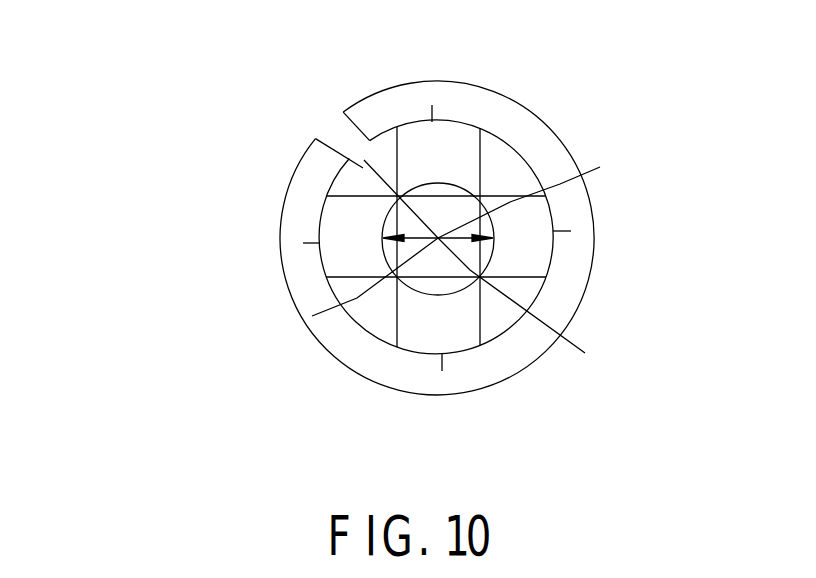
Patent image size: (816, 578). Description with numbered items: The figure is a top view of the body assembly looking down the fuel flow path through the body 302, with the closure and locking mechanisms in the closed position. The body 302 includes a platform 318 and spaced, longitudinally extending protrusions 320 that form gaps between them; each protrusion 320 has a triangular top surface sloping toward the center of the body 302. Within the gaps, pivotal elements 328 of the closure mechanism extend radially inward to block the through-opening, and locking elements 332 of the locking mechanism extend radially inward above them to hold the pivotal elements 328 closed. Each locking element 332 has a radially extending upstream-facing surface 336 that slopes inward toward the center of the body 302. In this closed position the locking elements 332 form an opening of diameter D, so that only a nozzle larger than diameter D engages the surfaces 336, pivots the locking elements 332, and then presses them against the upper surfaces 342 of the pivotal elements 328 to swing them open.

The body 302 is at (291, 184).
The platform 318 is at (297, 222).
The protrusions 320 is at (343, 150).
The locking elements 332 is at (498, 172).
The pivotal elements 328 is at (443, 203).
The upstream-facing surface 336 is at (420, 150).
The upper surface 342 is at (444, 279).
The diameter D is at (600, 167).